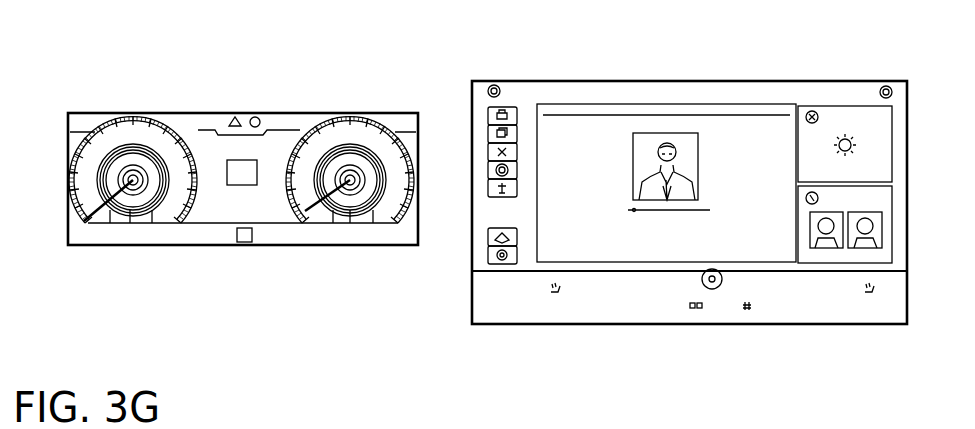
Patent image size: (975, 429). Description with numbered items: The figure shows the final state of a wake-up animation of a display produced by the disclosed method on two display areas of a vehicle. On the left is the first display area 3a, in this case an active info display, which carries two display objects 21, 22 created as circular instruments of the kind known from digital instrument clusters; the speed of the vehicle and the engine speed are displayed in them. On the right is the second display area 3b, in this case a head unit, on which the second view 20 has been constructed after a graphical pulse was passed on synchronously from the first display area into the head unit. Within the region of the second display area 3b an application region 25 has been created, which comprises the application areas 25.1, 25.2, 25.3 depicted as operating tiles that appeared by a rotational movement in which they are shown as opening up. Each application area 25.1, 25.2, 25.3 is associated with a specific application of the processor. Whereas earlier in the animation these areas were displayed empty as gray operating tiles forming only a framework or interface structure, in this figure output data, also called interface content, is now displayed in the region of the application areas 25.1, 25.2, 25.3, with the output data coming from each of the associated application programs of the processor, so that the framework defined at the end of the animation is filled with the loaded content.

The second view 20 is at (471, 255).
The display object 21 is at (105, 117).
The display object 22 is at (378, 118).
The first display area 3a is at (172, 113).
The second display area 3b is at (820, 81).
The application region 25 is at (257, 216).
The application area 25.1 is at (625, 127).
The application area 25.2 is at (868, 118).
The application area 25.3 is at (845, 250).